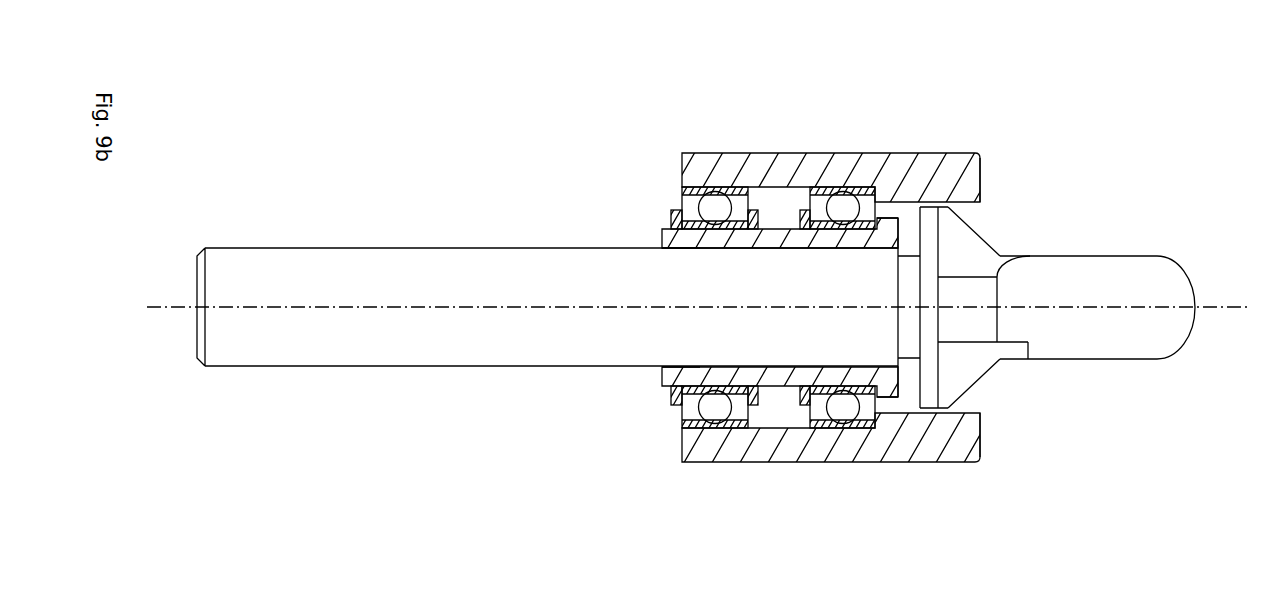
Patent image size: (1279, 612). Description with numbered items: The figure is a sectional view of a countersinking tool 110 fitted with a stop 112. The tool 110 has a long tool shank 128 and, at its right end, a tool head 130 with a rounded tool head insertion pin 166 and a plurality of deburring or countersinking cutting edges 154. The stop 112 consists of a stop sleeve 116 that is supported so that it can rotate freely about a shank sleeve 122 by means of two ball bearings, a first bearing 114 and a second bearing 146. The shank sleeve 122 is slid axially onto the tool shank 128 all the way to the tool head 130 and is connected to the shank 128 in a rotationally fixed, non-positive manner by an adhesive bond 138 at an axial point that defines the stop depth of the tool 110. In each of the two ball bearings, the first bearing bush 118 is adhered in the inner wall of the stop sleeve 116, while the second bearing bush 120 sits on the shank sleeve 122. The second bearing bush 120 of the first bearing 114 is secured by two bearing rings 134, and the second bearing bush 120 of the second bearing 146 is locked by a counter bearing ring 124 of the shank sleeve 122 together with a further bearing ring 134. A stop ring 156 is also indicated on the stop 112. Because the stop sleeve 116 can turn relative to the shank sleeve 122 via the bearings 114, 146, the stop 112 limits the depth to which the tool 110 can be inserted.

The tool 110 is at (1095, 289).
The stop 112 is at (814, 276).
The bearing 114 is at (710, 177).
The stop sleeve 116 is at (893, 144).
The first bearing bush 118 is at (683, 186).
The second bearing bush 120 is at (734, 229).
The shank sleeve 122 is at (900, 400).
The counter bearing ring 124 is at (885, 397).
The tool shank 128 is at (353, 272).
The tool head 130 is at (987, 374).
The bearing ring 134 is at (673, 408).
The adhesive bond 138 is at (695, 250).
The second bearing 146 is at (838, 177).
The cutting edge 154 is at (992, 248).
The stop ring 156 is at (985, 177).
The tool head insertion pin 166 is at (1173, 340).